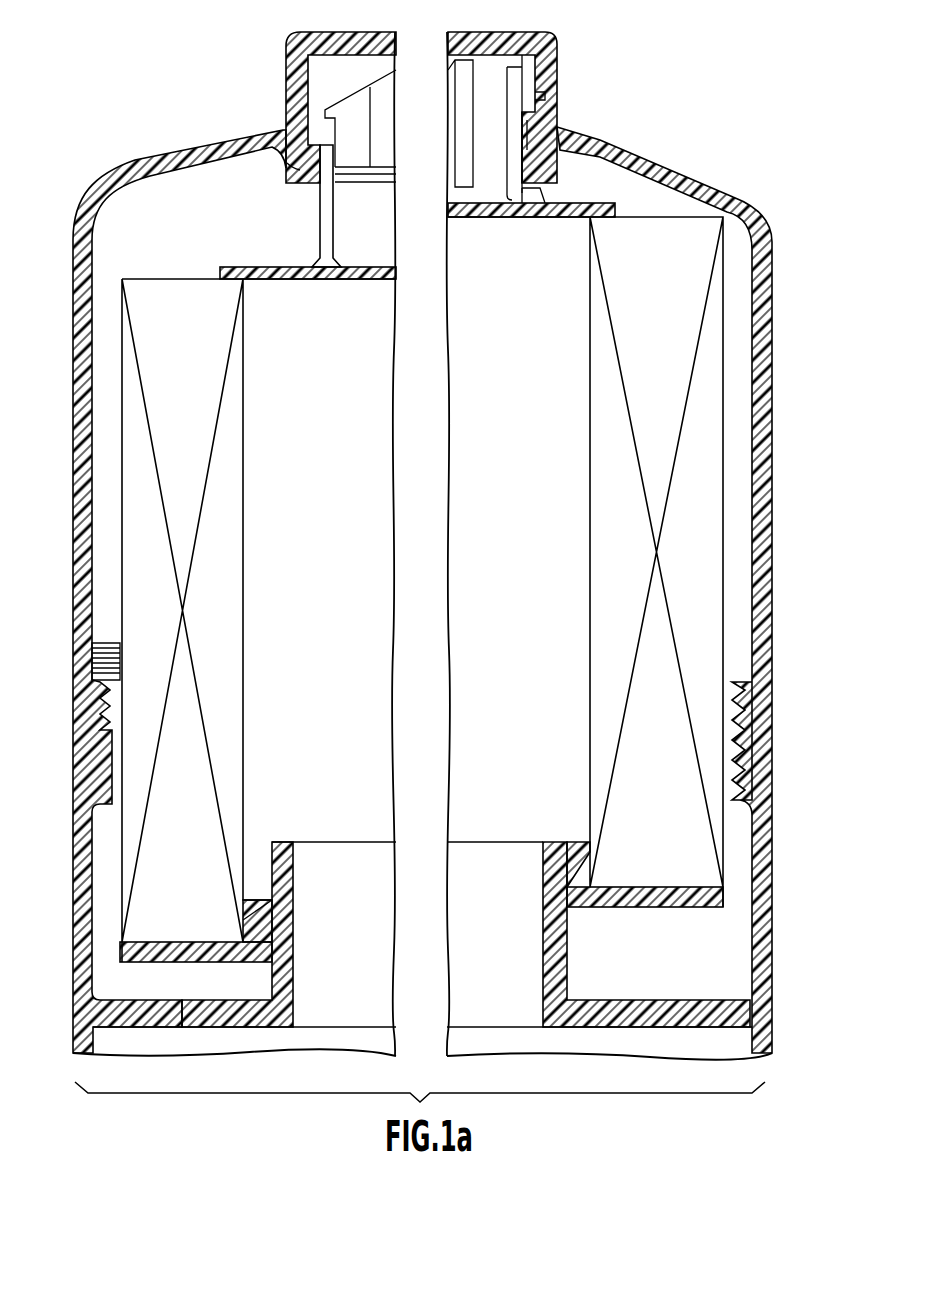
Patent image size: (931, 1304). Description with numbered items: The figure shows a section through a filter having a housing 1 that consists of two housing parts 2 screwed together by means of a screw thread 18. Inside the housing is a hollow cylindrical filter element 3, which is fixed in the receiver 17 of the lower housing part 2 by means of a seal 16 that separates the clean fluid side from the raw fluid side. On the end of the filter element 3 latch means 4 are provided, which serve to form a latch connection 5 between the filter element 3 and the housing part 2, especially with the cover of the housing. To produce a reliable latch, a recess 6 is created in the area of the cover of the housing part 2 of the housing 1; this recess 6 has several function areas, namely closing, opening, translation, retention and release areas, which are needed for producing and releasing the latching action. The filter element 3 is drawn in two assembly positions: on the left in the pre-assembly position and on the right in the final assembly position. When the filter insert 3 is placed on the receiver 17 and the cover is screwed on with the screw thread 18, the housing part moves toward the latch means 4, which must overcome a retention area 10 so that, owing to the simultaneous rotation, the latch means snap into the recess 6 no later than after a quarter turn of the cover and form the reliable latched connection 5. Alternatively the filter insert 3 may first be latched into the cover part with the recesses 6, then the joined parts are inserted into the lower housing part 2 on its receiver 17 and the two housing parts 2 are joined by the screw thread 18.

The housing 1 is at (134, 134).
The housing part 2 is at (73, 489).
The filter element 3 is at (146, 325).
The latch means 4 is at (326, 223).
The latch connection 5 is at (300, 163).
The recess 6 is at (536, 123).
The retention area 10 is at (537, 200).
The seal 16 is at (246, 920).
The receiver 17 is at (294, 970).
The screw thread 18 is at (760, 711).